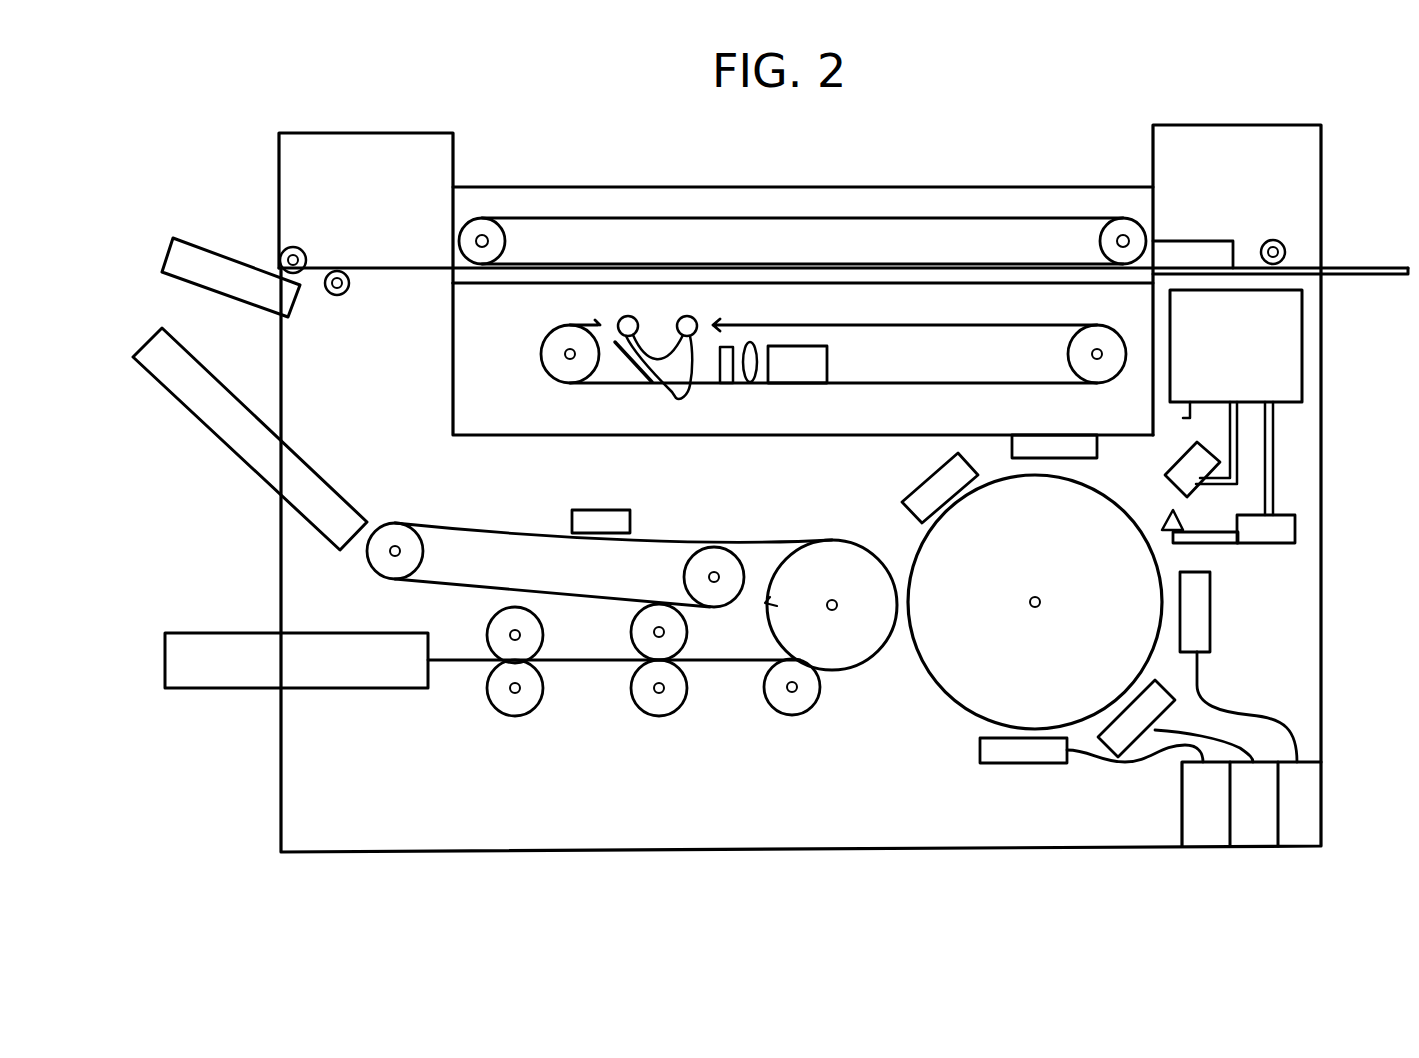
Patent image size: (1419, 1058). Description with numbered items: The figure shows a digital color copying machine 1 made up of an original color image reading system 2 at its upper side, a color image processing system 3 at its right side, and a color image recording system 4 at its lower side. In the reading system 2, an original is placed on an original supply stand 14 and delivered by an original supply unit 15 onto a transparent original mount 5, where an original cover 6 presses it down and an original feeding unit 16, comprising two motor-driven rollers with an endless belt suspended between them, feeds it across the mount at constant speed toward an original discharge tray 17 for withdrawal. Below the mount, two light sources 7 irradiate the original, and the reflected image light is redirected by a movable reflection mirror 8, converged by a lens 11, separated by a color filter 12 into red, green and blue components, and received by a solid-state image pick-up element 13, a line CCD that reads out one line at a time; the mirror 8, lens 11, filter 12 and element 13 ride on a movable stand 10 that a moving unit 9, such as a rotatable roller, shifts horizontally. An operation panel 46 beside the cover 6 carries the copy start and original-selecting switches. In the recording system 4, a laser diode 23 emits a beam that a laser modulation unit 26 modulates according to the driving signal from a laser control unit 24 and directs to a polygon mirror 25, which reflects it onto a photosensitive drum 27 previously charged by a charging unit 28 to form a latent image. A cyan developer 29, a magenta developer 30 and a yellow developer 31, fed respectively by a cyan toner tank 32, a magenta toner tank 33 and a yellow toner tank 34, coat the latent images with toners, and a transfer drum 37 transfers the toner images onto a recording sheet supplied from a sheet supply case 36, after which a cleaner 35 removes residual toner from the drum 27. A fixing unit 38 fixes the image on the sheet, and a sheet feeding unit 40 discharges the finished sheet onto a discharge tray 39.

The digital color copying machine 1 is at (231, 539).
The original color image reading system 2 is at (253, 198).
The color image processing system 3 is at (1284, 322).
The color image recording system 4 is at (629, 866).
The transparent original mount 5 is at (845, 262).
The original cover 6 is at (628, 208).
The light sources 7 is at (677, 400).
The movable reflection mirror 8 is at (617, 343).
The moving unit 9 is at (1108, 342).
The movable stand 10 is at (600, 387).
The lens 11 is at (726, 383).
The color filter 12 is at (753, 370).
The solid-state image pick-up element 13 is at (812, 367).
The original supply stand 14 is at (185, 263).
The original supply unit 15 is at (370, 268).
The original feeding unit 16 is at (483, 230).
The original discharge tray 17 is at (1357, 268).
The laser diode 23 is at (1163, 523).
The laser control unit 24 is at (1280, 532).
The polygon mirror 25 is at (1200, 463).
The laser modulation unit 26 is at (1227, 543).
The photosensitive drum 27 is at (968, 652).
The charging unit 28 is at (1065, 450).
The cyan developer 29 is at (1197, 628).
The magenta developer 30 is at (1127, 725).
The yellow developer 31 is at (1025, 752).
The cyan toner tank 32 is at (1303, 802).
The magenta toner tank 33 is at (1258, 827).
The yellow toner tank 34 is at (1207, 827).
The cleaner 35 is at (937, 493).
The sheet supply case 36 is at (237, 668).
The transfer drum 37 is at (795, 627).
The fixing unit 38 is at (613, 523).
The discharge tray 39 is at (208, 407).
The sheet feeding unit 40 is at (395, 540).
The operation panel 46 is at (1195, 257).